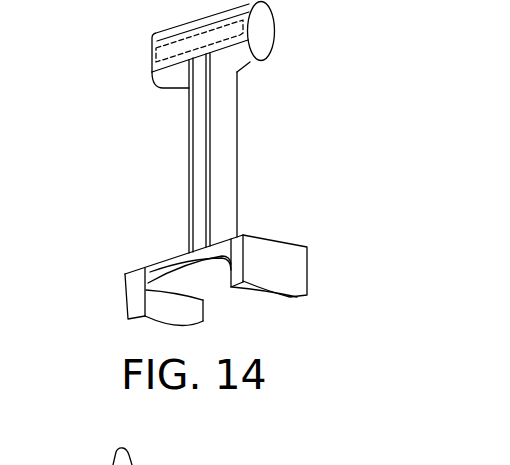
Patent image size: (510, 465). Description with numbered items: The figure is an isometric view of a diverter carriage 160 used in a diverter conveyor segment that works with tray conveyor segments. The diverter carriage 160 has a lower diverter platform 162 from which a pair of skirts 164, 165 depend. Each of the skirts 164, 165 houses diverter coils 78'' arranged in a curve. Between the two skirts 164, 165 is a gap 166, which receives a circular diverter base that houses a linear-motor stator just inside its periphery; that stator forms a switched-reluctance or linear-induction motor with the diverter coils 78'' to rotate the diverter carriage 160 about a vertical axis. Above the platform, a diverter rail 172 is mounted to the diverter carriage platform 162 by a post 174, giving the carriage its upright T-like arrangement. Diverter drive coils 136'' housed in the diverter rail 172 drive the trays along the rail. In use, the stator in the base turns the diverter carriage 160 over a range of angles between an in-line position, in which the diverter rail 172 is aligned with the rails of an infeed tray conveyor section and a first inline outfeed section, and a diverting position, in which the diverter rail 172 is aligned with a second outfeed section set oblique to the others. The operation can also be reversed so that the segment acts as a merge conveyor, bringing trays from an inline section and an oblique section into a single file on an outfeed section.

The diverter carriage 160 is at (101, 146).
The diverter rail 172 is at (257, 34).
The diverter drive coils 136'' is at (164, 34).
The post 174 is at (234, 176).
The lower diverter platform 162 is at (169, 259).
The skirt 164 is at (305, 282).
The skirt 165 is at (128, 308).
The gap 166 is at (268, 308).
The diverter coils 78'' is at (204, 299).